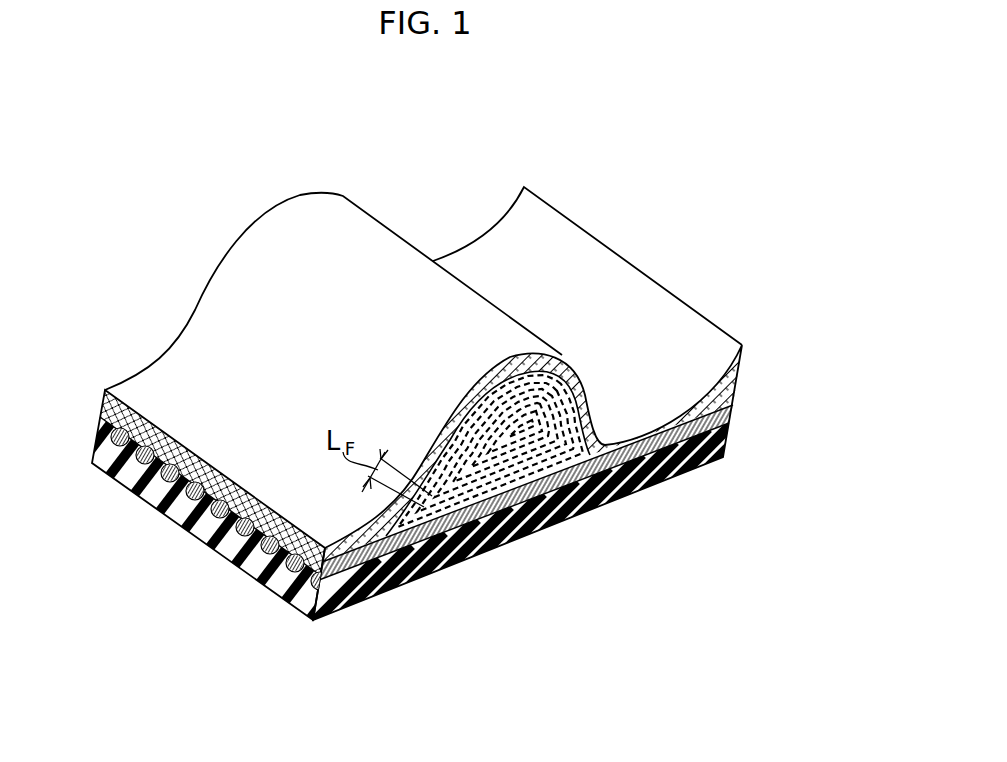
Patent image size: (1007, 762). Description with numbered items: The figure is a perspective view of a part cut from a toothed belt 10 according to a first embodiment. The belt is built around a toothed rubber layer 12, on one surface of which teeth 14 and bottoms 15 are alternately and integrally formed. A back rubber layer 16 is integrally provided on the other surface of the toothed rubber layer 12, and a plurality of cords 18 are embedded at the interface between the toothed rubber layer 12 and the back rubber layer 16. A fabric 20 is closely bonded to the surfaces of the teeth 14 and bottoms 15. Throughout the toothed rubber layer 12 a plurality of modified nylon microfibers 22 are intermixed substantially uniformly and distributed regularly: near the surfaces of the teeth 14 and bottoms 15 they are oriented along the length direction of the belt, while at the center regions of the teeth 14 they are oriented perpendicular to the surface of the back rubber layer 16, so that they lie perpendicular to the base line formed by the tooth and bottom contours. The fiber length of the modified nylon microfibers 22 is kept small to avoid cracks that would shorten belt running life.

The toothed belt 10 is at (447, 160).
The toothed rubber layer 12 is at (543, 512).
The teeth 14 is at (612, 502).
The bottoms 15 is at (358, 588).
The back rubber layer 16 is at (137, 468).
The cords 18 is at (283, 560).
The fabric 20 is at (588, 272).
The modified nylon microfibers 22 is at (492, 537).